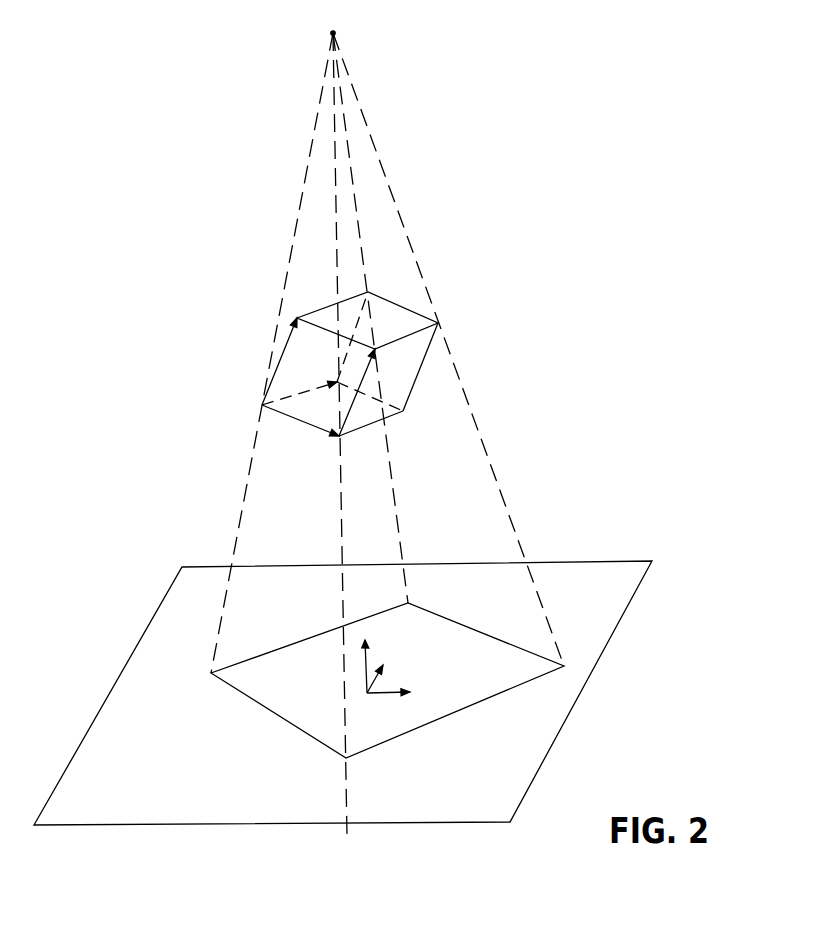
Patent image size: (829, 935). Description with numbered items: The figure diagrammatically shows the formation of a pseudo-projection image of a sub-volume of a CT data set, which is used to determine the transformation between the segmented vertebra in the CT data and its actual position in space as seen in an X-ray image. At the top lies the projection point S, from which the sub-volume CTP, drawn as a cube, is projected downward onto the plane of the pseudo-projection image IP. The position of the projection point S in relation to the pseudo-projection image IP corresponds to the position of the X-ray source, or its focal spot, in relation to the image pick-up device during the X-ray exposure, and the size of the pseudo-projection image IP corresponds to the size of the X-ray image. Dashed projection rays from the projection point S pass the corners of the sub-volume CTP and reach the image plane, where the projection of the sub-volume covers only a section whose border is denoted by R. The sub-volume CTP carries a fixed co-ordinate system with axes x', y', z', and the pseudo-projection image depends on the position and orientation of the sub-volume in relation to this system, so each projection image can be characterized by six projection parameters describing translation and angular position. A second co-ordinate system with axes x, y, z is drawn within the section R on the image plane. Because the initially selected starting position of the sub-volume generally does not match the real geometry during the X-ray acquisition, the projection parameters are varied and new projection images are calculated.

The projection point S is at (338, 32).
The sub-volume CTP is at (397, 302).
The pseudo-projection image IP is at (610, 590).
The border of projection section R is at (450, 720).
The x axis x is at (388, 703).
The y axis y is at (382, 677).
The z axis z is at (372, 664).
The x' axis of fixed co-ordinate system x' is at (310, 437).
The y' axis of fixed co-ordinate system y' is at (312, 378).
The z' axis of fixed co-ordinate system z' is at (264, 342).